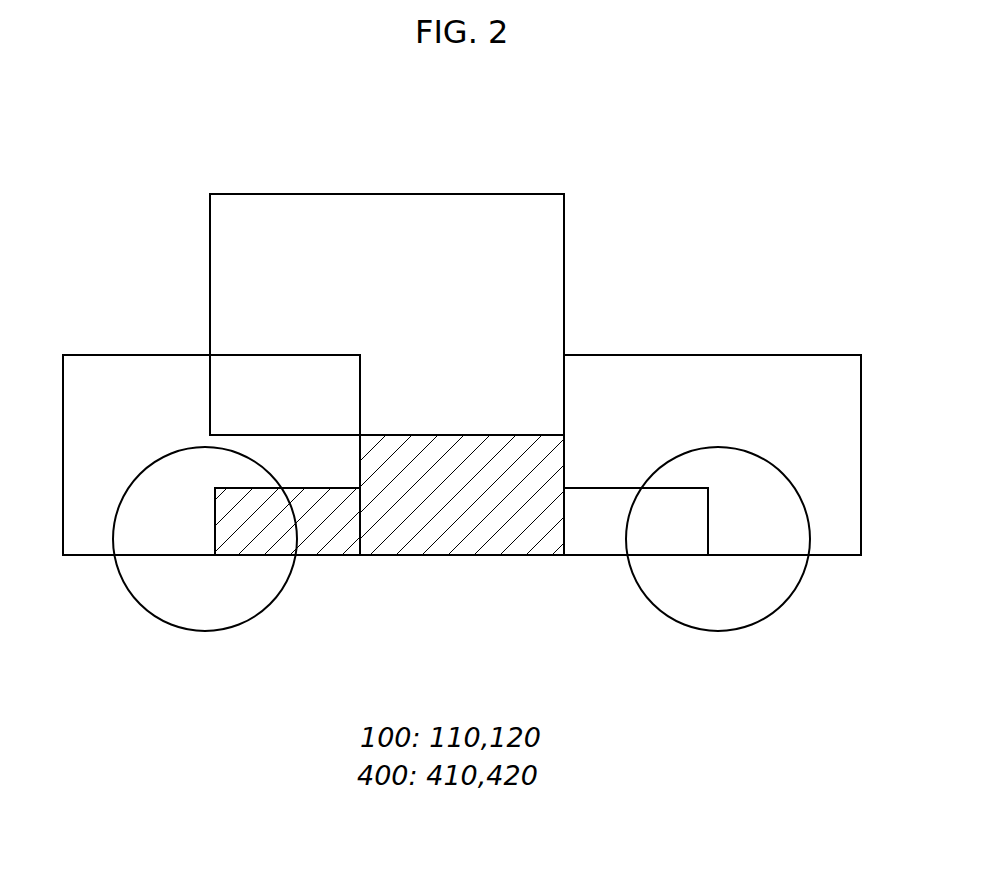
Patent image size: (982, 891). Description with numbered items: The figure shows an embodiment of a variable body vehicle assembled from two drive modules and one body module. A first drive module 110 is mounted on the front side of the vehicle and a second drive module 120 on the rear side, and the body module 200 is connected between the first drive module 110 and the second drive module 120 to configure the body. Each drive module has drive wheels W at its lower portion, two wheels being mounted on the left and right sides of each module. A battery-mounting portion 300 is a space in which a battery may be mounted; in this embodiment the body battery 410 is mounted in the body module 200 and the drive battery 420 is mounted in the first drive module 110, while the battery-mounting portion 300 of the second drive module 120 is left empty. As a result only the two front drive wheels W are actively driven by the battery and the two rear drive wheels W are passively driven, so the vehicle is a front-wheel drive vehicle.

The first drive module 110 is at (120, 370).
The second drive module 120 is at (783, 370).
The body module 200 is at (440, 213).
The battery-mounting portion 300 is at (600, 542).
The body battery 410 is at (473, 542).
The drive battery 420 is at (323, 542).
The drive wheels W is at (205, 633).